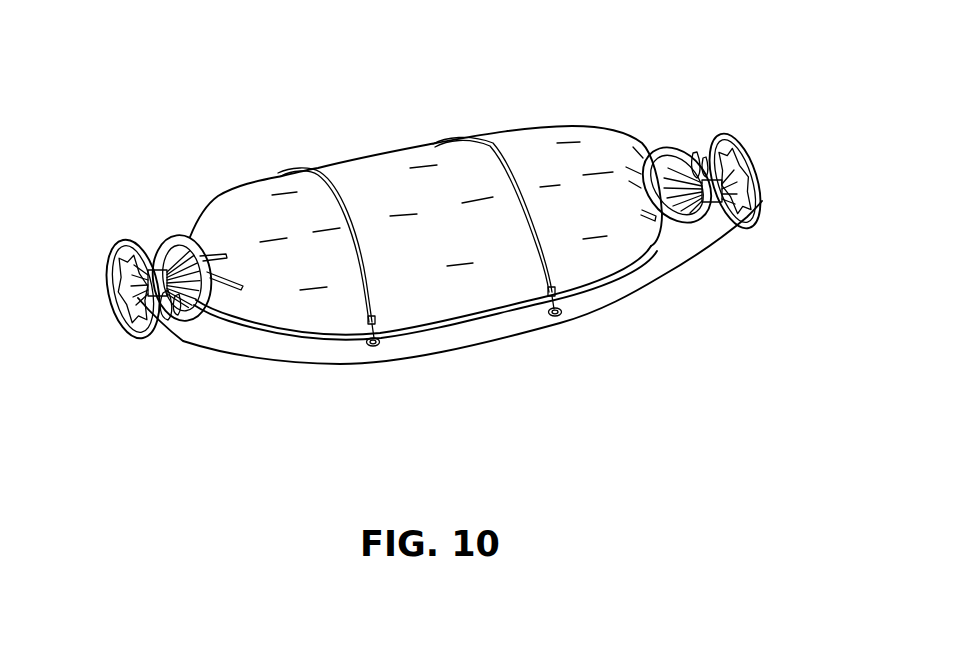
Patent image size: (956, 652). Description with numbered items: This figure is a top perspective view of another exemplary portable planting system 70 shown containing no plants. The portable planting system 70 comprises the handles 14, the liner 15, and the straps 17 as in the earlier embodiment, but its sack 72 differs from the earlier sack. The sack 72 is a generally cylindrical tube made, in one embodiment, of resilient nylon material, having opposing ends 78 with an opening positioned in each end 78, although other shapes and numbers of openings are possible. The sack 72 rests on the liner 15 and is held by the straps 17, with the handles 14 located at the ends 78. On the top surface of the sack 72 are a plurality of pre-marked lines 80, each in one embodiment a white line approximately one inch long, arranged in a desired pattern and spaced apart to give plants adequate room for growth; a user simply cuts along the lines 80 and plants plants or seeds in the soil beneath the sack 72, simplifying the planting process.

The portable planting system 70 is at (422, 34).
The sack 72 is at (381, 163).
The liner 15 is at (292, 348).
The straps 17 is at (322, 172).
The pre-marked lines 80 is at (594, 240).
The opposing ends 78 is at (182, 297).
The handles 14 is at (127, 297).